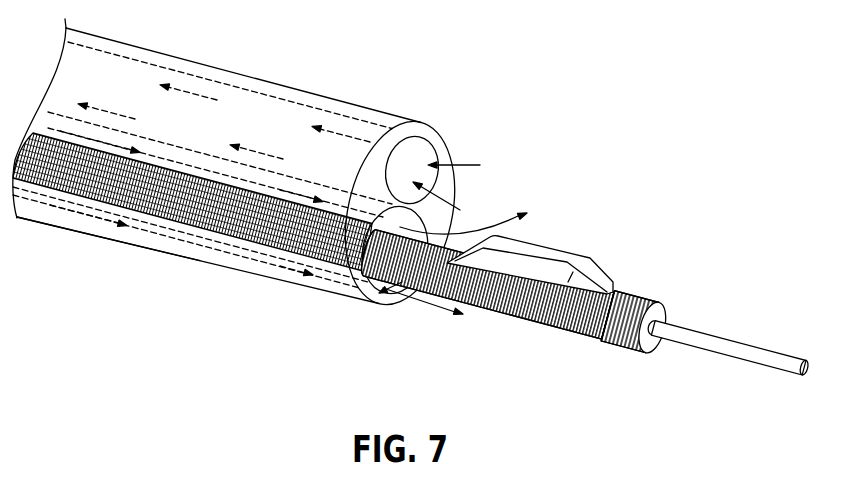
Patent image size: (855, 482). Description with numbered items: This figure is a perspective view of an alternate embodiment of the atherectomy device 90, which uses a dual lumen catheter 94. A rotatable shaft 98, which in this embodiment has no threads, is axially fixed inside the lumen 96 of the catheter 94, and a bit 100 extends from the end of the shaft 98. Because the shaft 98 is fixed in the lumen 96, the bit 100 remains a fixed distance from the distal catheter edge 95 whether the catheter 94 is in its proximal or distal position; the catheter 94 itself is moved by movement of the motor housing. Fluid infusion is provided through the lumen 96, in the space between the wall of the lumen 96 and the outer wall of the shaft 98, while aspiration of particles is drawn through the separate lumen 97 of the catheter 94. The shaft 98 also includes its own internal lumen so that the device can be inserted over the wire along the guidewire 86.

The guidewire 86 is at (740, 340).
The atherectomy device 90 is at (130, 274).
The dual lumen catheter 94 is at (258, 78).
The distal catheter edge 95 is at (423, 122).
The lumen 96 is at (387, 307).
The lumen 97 is at (430, 148).
The rotatable shaft 98 is at (532, 319).
The bit 100 is at (563, 248).